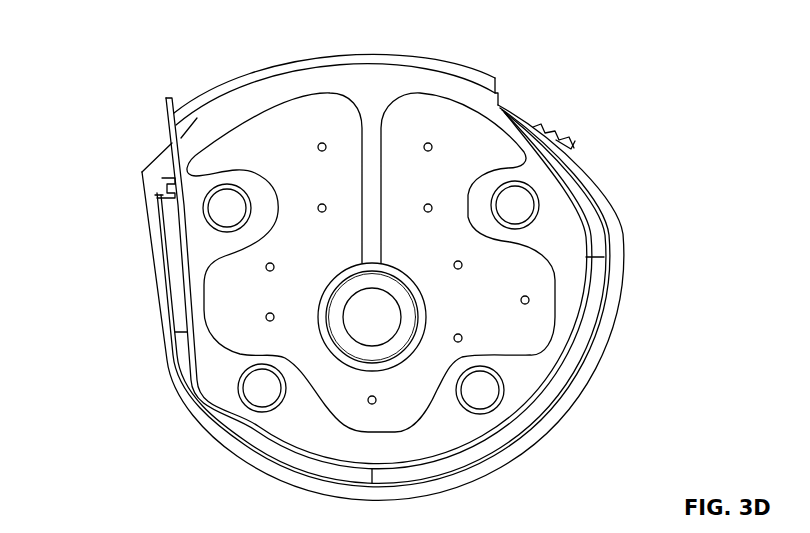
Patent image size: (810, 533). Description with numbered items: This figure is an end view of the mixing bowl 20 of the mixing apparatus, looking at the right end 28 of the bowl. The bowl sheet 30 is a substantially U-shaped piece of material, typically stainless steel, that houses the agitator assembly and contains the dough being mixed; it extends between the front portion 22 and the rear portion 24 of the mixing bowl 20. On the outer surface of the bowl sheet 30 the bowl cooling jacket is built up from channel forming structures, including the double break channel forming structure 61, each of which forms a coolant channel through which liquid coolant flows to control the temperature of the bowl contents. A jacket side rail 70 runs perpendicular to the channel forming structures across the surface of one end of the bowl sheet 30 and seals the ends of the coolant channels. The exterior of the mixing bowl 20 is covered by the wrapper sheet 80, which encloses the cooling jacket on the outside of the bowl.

The mixing bowl 20 is at (95, 64).
The front portion 22 is at (137, 226).
The rear portion 24 is at (634, 275).
The right end 28 is at (523, 335).
The bowl sheet 30 is at (167, 117).
The double break channel forming structure 61 is at (150, 181).
The jacket side rail 70 is at (178, 293).
The wrapper sheet 80 is at (189, 401).